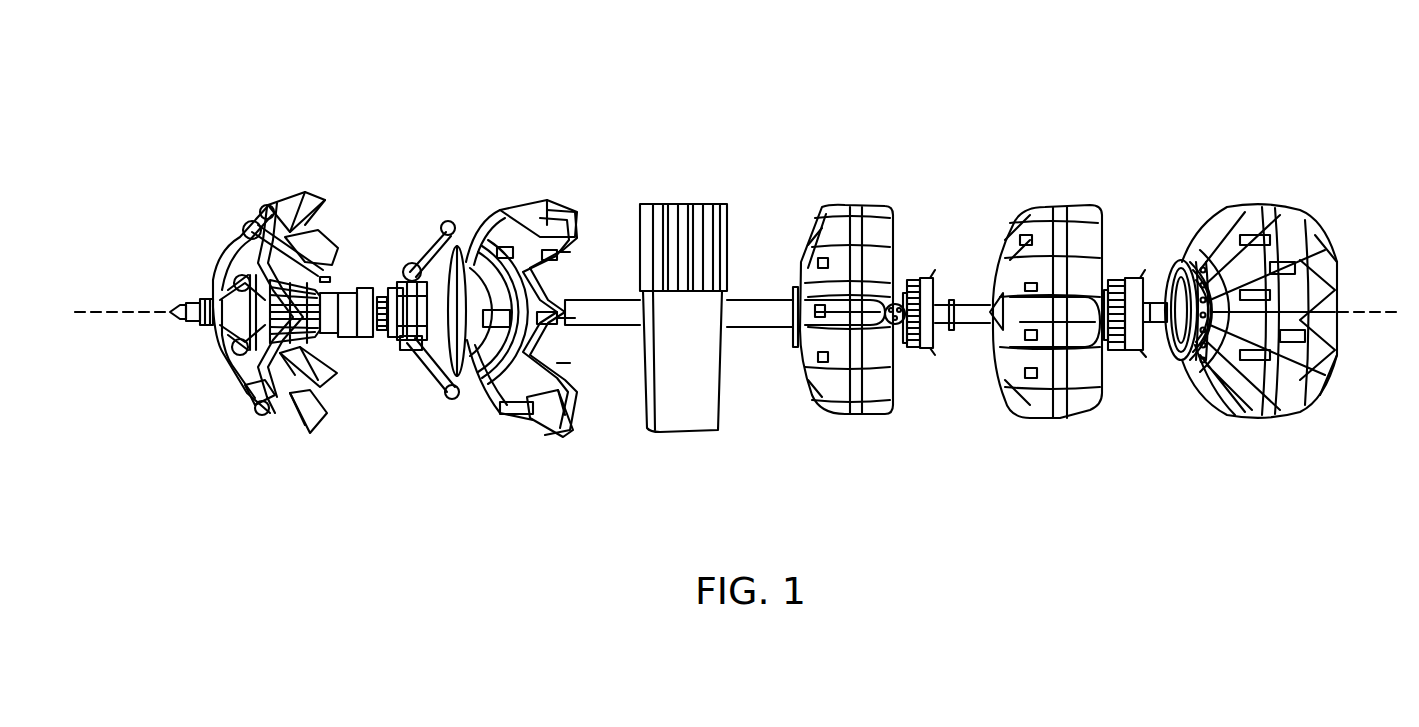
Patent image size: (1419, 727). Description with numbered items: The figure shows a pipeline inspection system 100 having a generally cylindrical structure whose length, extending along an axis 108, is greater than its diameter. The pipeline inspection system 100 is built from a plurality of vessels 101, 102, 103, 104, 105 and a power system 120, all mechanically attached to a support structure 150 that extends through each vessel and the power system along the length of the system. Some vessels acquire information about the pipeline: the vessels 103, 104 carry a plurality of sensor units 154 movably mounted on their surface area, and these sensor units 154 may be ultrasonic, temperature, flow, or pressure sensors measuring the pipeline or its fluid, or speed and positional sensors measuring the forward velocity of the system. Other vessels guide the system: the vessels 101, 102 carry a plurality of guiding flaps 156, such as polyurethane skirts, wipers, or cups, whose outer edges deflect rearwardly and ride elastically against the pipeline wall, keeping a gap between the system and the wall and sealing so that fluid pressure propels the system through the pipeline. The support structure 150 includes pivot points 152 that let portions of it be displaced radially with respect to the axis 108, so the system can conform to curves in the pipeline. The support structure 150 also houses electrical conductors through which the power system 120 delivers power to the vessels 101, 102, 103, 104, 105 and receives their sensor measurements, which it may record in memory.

The pipeline inspection system 100 is at (198, 94).
The vessel 101 is at (289, 172).
The vessel 102 is at (516, 174).
The vessel 103 is at (864, 178).
The vessel 104 is at (1059, 178).
The vessel 105 is at (1268, 184).
The axis 108 is at (112, 316).
The power system 120 is at (696, 156).
The support structure 150 is at (380, 381).
The pivot points 152 is at (922, 268).
The sensor units 154 is at (800, 226).
The guiding flaps 156 is at (344, 194).